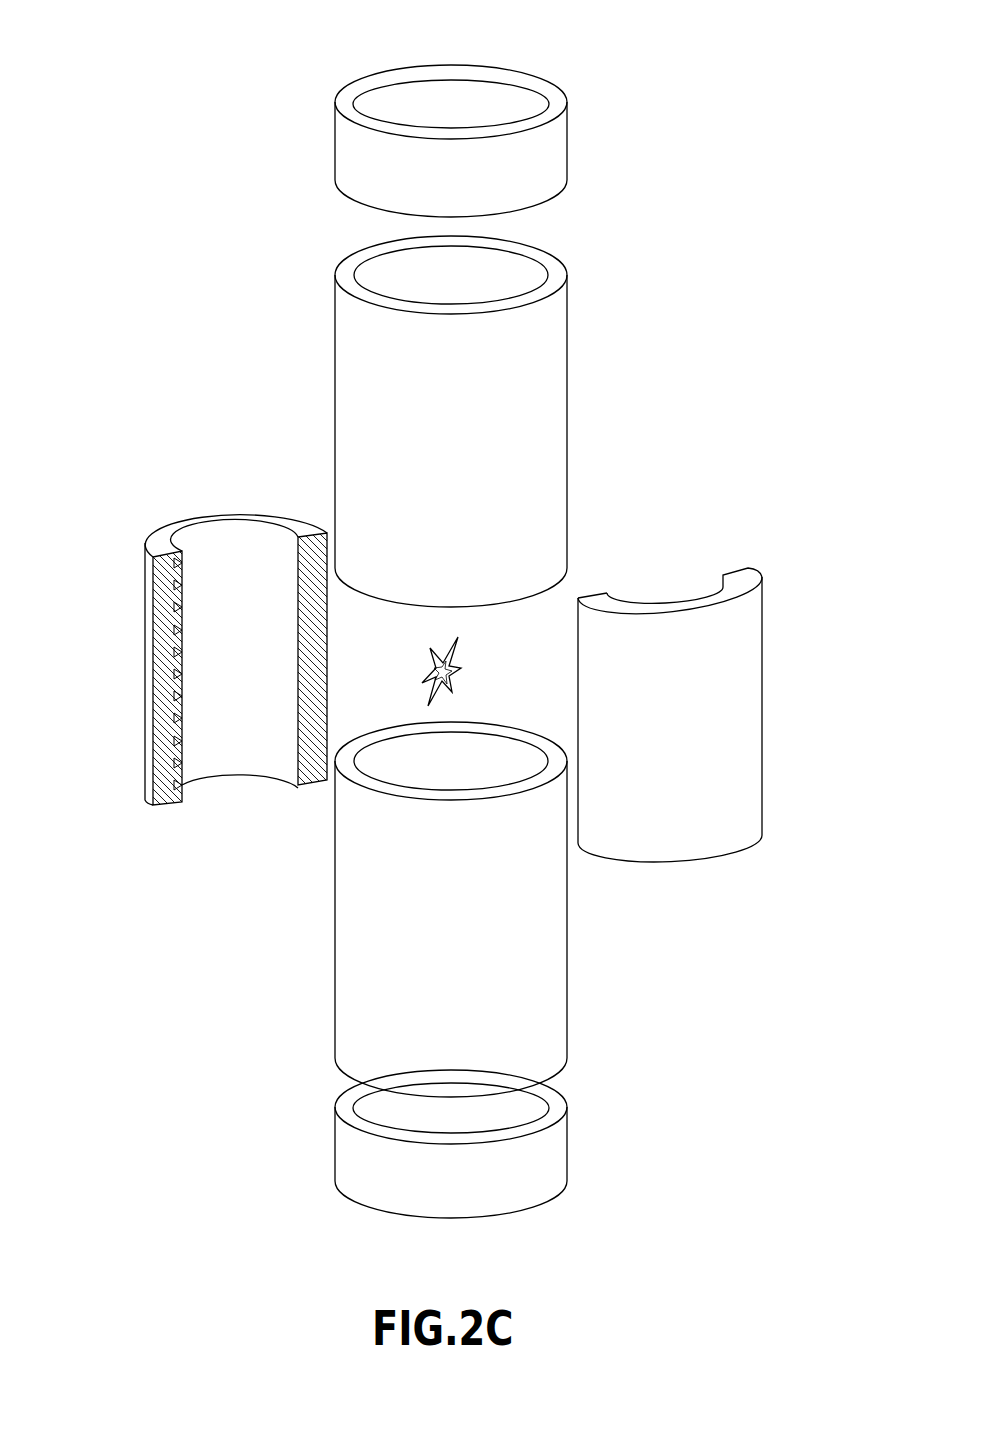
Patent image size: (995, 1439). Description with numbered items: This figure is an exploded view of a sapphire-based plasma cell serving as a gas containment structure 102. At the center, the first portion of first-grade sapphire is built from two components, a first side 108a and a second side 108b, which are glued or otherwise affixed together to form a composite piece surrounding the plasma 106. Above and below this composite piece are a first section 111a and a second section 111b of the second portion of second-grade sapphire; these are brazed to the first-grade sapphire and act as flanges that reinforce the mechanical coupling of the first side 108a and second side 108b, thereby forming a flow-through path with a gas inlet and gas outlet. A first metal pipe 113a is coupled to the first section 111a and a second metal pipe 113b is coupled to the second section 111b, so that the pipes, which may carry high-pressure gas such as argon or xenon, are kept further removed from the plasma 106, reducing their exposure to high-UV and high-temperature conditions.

The gas containment structure 102 is at (234, 31).
The plasma 106 is at (453, 665).
The first side 108a is at (152, 658).
The second side 108b is at (750, 727).
The first section 111a is at (335, 930).
The second section 111b is at (335, 412).
The first metal pipe 113a is at (335, 1152).
The second metal pipe 113b is at (335, 147).